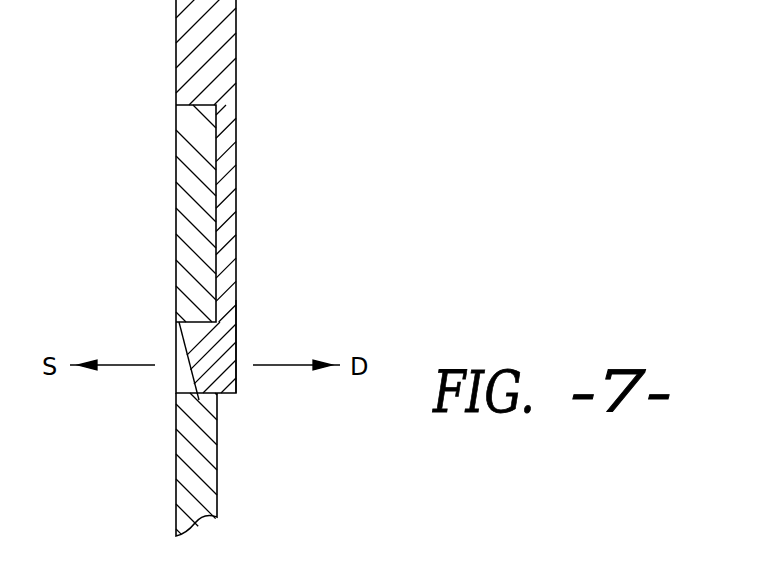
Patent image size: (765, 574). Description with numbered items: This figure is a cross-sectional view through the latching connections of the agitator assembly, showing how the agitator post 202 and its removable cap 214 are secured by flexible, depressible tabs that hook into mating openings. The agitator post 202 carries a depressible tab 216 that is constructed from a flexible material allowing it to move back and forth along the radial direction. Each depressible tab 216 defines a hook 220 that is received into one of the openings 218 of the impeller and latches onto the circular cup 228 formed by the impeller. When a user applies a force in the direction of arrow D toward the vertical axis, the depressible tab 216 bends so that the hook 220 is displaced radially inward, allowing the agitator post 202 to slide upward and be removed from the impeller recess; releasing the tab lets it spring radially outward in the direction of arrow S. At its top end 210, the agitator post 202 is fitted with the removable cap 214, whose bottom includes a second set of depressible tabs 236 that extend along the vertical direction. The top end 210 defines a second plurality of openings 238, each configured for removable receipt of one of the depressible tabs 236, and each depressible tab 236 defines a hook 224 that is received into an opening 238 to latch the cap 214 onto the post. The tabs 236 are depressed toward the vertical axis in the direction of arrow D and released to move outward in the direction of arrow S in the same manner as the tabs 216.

The agitator post 202 is at (280, 196).
The removable cap 214 is at (213, 79).
The opening 218 is at (131, 213).
The opening 238 is at (168, 192).
The hook 220 is at (120, 339).
The hook 224 is at (182, 346).
The depressible tab 216 is at (326, 346).
The depressible tab 236 is at (251, 337).
The circular cup 228 is at (277, 464).
The top end 210 is at (208, 474).